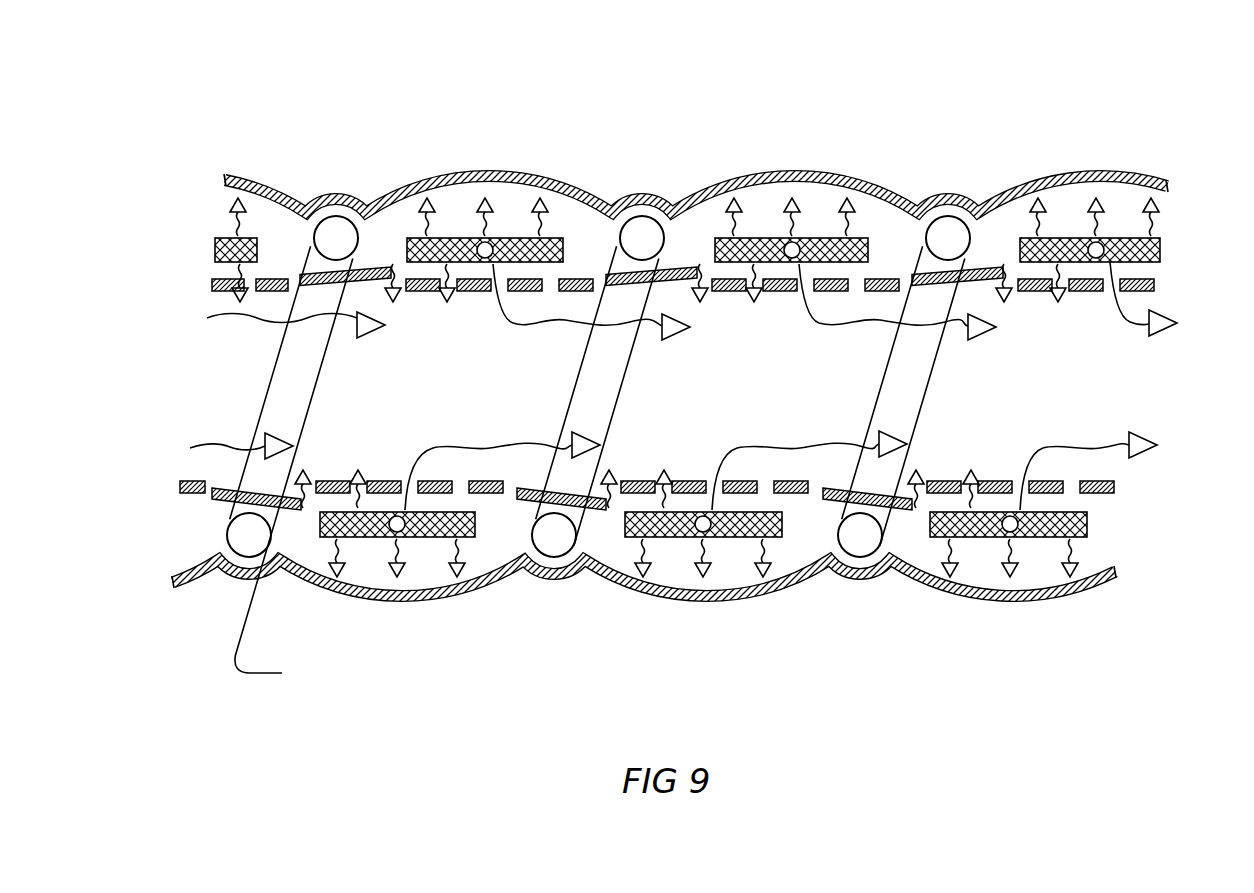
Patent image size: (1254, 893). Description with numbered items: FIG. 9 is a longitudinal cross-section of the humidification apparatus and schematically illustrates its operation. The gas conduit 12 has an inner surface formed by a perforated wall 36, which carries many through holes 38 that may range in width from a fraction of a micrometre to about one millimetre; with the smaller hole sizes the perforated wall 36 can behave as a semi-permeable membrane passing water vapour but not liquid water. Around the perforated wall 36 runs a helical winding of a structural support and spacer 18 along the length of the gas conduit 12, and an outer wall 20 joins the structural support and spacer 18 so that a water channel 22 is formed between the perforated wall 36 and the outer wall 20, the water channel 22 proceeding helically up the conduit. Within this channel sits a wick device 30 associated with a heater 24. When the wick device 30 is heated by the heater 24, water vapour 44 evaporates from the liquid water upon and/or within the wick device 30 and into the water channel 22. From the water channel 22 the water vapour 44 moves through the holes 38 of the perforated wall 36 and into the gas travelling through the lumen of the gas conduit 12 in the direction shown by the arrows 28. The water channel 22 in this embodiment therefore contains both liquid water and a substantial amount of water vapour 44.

The gas conduit 12 is at (772, 80).
The structural support and spacer 18 is at (337, 232).
The outer wall 20 is at (1016, 168).
The water channel 22 is at (577, 226).
The heater 24 is at (797, 241).
The arrows 28 is at (189, 408).
The wick device 30 is at (450, 228).
The perforated wall 36 is at (1123, 488).
The through holes 38 is at (222, 276).
The water vapour 44 is at (695, 387).